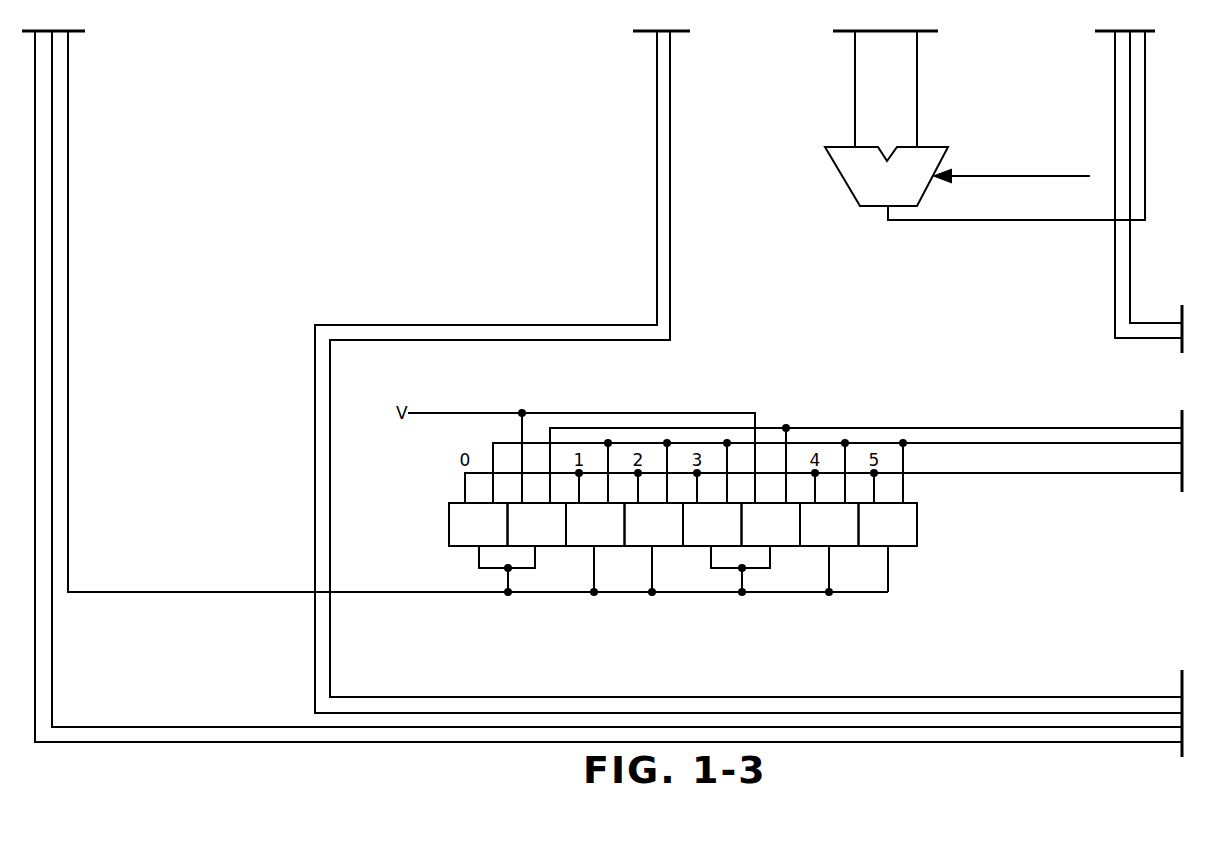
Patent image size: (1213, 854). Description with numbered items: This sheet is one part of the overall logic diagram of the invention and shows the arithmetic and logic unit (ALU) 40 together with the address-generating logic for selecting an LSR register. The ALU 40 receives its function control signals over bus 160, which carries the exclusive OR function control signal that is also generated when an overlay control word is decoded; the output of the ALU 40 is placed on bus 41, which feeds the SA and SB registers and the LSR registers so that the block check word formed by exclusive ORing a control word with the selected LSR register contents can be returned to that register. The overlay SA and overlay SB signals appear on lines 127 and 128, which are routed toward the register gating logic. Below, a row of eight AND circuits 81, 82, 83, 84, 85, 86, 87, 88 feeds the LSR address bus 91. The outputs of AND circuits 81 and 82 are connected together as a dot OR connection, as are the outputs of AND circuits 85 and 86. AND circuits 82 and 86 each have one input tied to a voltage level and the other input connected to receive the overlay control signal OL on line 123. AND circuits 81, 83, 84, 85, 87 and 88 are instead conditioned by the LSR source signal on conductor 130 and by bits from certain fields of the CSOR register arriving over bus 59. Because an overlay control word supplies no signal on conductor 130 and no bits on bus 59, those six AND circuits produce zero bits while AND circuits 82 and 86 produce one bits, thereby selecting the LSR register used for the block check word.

The bus 91 is at (71, 95).
The arithmetic and logic unit (ALU) 40 is at (847, 187).
The bus 41 is at (1035, 221).
The bus 160 is at (1073, 176).
The line 127 is at (1115, 68).
The line 128 is at (1132, 262).
The line 123 is at (1002, 428).
The conductor 130 is at (1040, 445).
The bus 59 is at (1110, 475).
The AND circuit 81 is at (487, 541).
The AND circuit 82 is at (545, 541).
The AND circuit 83 is at (604, 541).
The AND circuit 84 is at (662, 541).
The AND circuit 85 is at (721, 541).
The AND circuit 86 is at (779, 541).
The AND circuit 87 is at (838, 541).
The AND circuit 88 is at (896, 541).